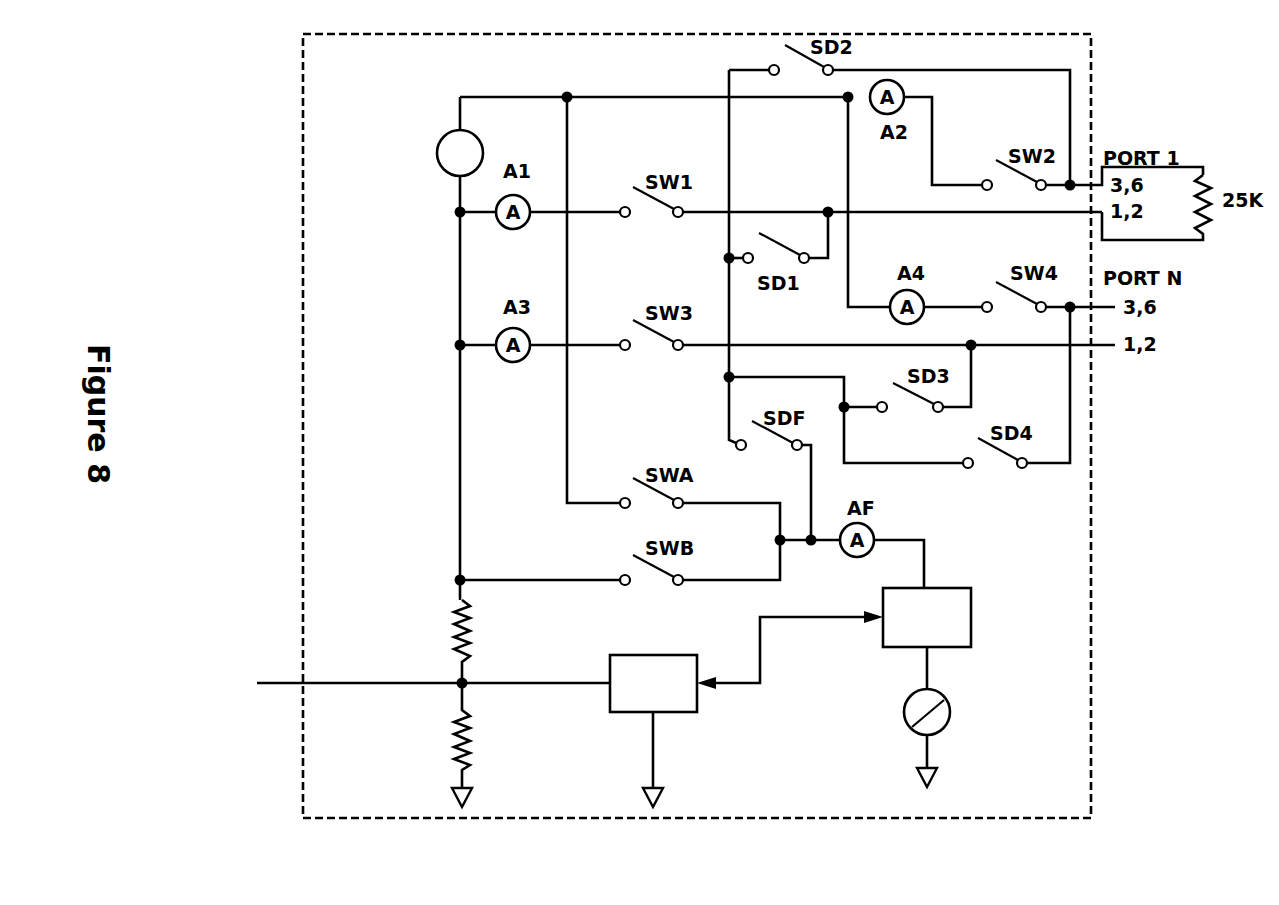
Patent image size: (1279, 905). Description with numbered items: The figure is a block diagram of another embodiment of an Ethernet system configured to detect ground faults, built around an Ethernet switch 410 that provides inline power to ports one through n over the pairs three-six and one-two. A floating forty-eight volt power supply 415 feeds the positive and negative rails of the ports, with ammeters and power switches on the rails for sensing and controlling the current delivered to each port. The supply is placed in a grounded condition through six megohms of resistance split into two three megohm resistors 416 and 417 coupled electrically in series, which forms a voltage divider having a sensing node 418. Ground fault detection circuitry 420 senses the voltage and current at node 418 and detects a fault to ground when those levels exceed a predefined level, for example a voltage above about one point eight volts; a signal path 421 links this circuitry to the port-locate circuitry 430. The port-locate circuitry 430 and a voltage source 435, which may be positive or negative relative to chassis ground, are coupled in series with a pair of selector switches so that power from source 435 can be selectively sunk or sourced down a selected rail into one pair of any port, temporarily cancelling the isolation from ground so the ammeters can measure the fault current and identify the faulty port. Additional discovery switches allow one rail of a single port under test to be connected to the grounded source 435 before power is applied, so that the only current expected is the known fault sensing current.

The Ethernet switch 410 is at (302, 367).
The power supply 415 is at (420, 150).
The resistor 416 is at (455, 640).
The resistor 417 is at (455, 730).
The node 418 is at (285, 682).
The ground fault detection circuitry 420 is at (653, 731).
The control signal 421 is at (782, 618).
The port-locate circuitry 430 is at (927, 638).
The voltage source 435 is at (946, 695).